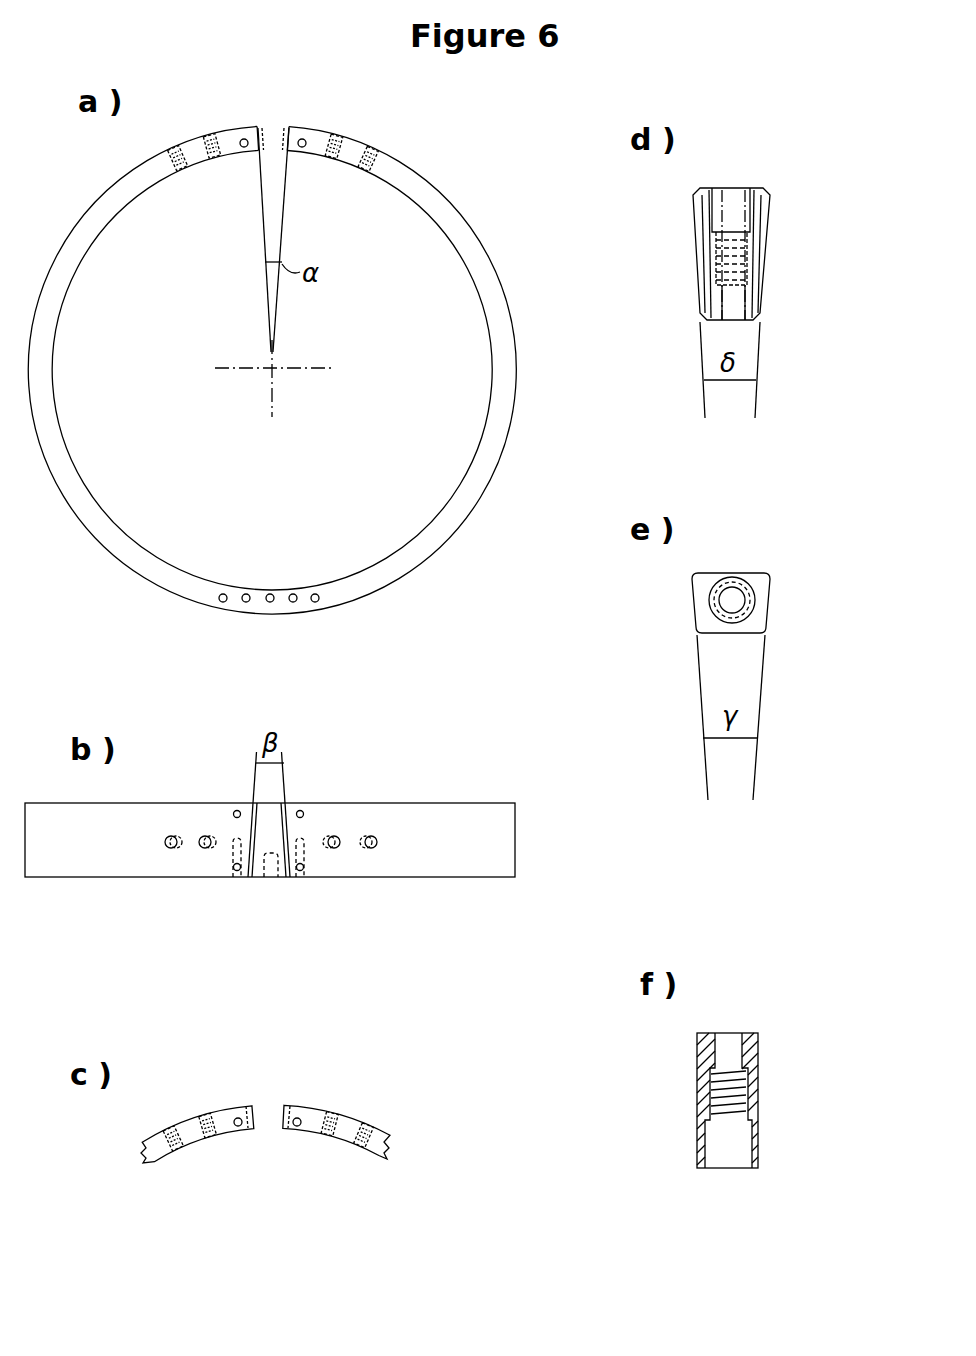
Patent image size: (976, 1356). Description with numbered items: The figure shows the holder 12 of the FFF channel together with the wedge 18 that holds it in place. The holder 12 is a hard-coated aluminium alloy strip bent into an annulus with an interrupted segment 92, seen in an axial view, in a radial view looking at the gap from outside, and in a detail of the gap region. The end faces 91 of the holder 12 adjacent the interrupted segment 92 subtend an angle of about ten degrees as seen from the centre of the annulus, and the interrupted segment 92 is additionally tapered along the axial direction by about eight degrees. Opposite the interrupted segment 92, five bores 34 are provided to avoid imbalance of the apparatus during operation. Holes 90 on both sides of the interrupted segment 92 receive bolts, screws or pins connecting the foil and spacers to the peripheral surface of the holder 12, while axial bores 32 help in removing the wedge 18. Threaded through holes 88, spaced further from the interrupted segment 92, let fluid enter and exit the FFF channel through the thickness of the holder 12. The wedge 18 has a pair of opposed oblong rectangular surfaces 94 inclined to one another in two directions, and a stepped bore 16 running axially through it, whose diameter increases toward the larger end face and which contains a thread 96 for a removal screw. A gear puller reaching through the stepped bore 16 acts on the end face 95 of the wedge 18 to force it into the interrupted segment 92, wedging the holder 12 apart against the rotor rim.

In FIG. 6a, the holder 12 is at (478, 243).
In FIG. 6b, the holder 12 is at (432, 806).
In FIG. 6c, the holder 12 is at (392, 1142).
In FIG. 6d, the stepped bore 16 is at (737, 220).
In FIG. 6e, the stepped bore 16 is at (736, 590).
In FIG. 6f, the stepped bore 16 is at (728, 1055).
In FIG. 6d, the wedge 18 is at (760, 250).
In FIG. 6e, the wedge 18 is at (765, 590).
In FIG. 6f, the wedge 18 is at (754, 1055).
In FIG. 6a, the axial bores 32 is at (244, 150).
In FIG. 6b, the axial bores 32 is at (240, 880).
In FIG. 6c, the axial bores 32 is at (238, 1128).
In FIG. 6a, the holes 34 is at (246, 604).
In FIG. 6b, the holes 34 is at (271, 882).
In FIG. 6a, the threaded through holes 88 is at (214, 160).
In FIG. 6b, the threaded through holes 88 is at (208, 850).
In FIG. 6c, the threaded through holes 88 is at (210, 1146).
In FIG. 6a, the holes 90 is at (305, 142).
In FIG. 6b, the holes 90 is at (234, 865).
In FIG. 6c, the holes 90 is at (238, 1108).
In FIG. 6a, the end faces 91 is at (256, 128).
In FIG. 6a, the interrupted segment 92 is at (275, 133).
In FIG. 6b, the interrupted segment 92 is at (268, 808).
In FIG. 6c, the interrupted segment 92 is at (272, 1108).
In FIG. 6d, the opposed surfaces 94 is at (770, 290).
In FIG. 6e, the opposed surfaces 94 is at (768, 612).
In FIG. 6d, the end face 95 is at (733, 186).
In FIG. 6f, the thread 96 is at (738, 1092).